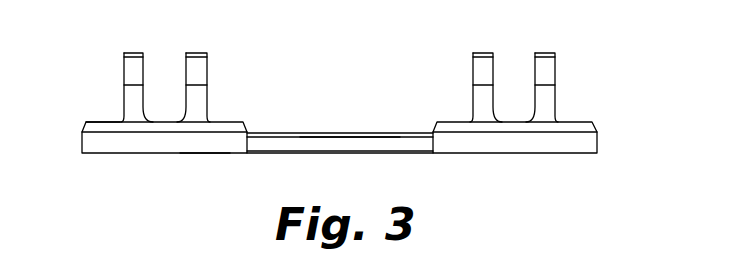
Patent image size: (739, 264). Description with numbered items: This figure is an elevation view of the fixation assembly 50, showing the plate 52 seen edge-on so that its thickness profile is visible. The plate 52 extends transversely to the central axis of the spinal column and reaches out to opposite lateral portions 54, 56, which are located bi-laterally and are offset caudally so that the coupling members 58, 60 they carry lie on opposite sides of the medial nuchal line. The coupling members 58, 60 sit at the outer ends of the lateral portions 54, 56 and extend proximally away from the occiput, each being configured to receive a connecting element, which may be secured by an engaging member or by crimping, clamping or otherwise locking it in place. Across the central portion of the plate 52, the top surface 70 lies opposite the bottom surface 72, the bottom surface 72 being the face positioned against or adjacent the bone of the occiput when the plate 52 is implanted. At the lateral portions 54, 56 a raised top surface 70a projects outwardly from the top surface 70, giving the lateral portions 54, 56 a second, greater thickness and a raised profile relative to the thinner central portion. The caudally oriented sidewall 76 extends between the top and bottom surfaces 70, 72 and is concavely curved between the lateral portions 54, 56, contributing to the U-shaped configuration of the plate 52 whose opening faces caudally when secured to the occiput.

The fixation assembly 50 is at (342, 120).
The plate 52 is at (201, 158).
The lateral portion 54 is at (82, 139).
The lateral portion 56 is at (593, 135).
The coupling member 58 is at (113, 63).
The coupling member 60 is at (572, 63).
The top surface 70 is at (317, 132).
The top surface 70a is at (92, 120).
The bottom surface 72 is at (332, 155).
The caudally oriented sidewall 76 is at (373, 140).